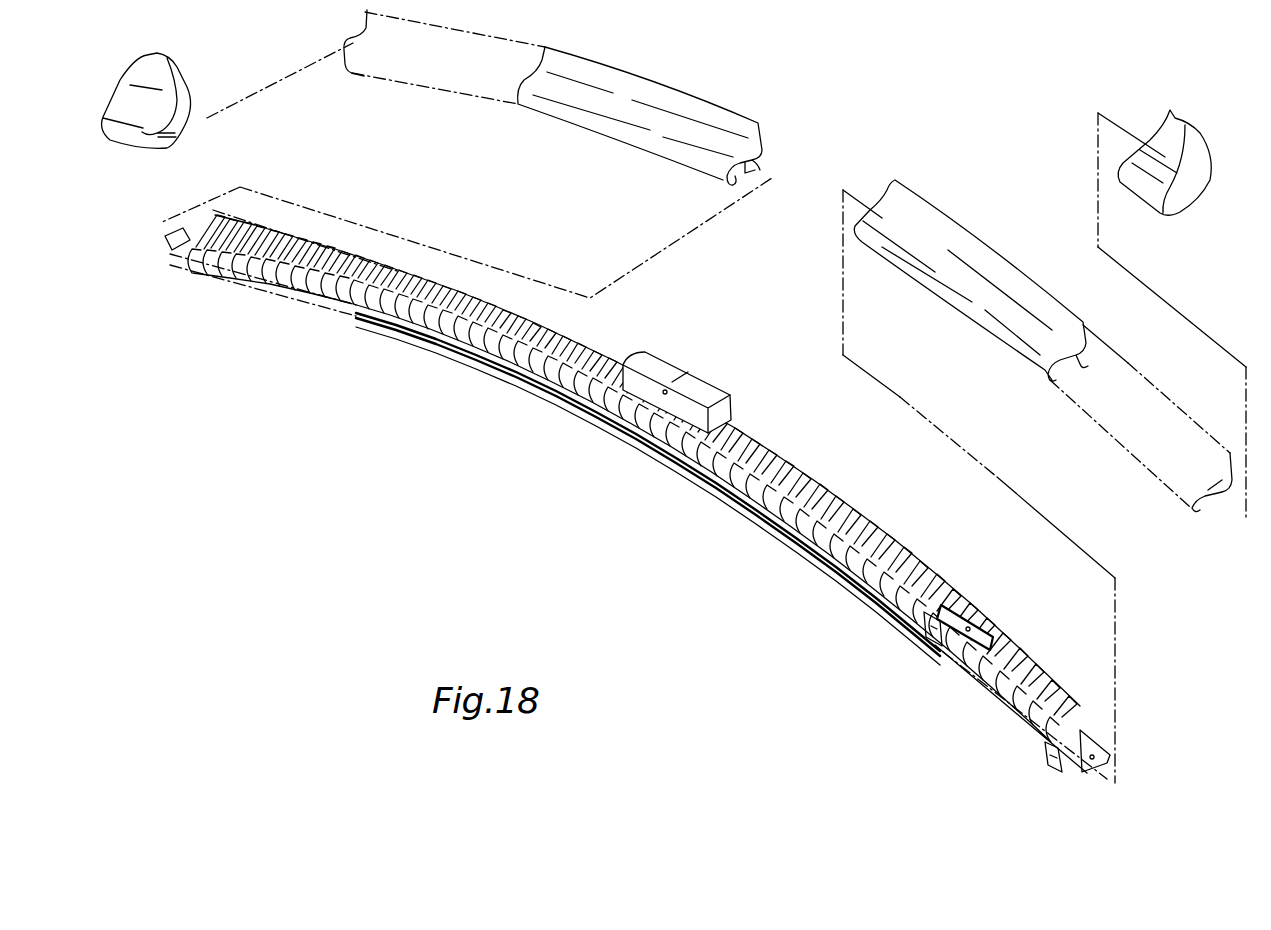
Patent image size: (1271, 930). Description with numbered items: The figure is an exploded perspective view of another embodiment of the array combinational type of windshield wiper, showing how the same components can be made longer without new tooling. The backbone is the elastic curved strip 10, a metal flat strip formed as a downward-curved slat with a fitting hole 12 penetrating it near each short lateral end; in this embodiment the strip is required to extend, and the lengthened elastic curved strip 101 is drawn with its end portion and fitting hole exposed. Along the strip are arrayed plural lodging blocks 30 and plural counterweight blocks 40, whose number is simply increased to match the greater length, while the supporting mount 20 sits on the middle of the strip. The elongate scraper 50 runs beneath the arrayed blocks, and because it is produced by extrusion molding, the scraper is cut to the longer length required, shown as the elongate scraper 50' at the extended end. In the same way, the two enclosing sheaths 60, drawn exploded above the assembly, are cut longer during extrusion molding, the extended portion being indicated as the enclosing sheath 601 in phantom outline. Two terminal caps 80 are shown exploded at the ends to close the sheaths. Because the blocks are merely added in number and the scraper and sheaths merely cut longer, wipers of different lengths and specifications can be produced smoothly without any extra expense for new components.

The elastic curved strip 10 is at (963, 610).
The fitting hole 12 is at (987, 617).
The supporting mount 20 is at (700, 384).
The lodging block 30 is at (918, 612).
The counterweight block 40 is at (895, 594).
The elongate scraper 50 is at (920, 637).
The elongate scraper 50' is at (1027, 761).
The enclosing sheath 60 is at (957, 236).
The enclosing sheath 601 is at (1108, 403).
The terminal cap 80 is at (1175, 121).
The elastic curved strip 101 is at (1087, 727).